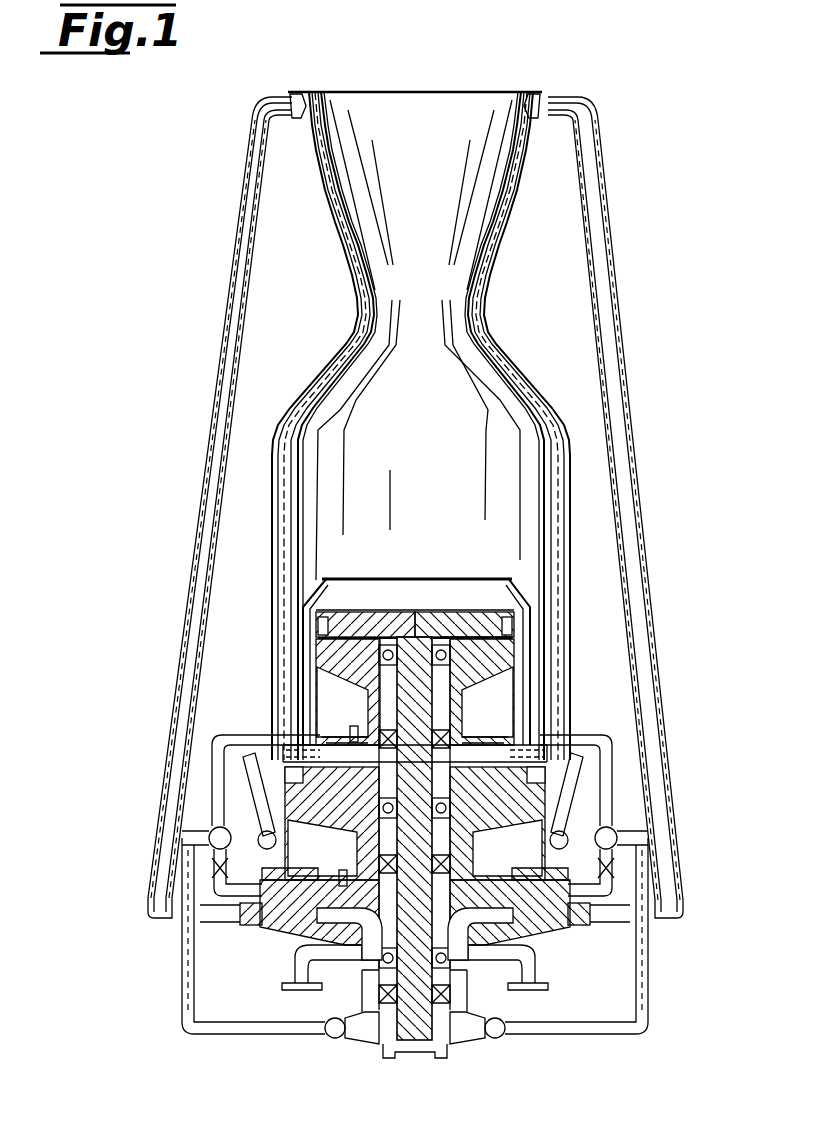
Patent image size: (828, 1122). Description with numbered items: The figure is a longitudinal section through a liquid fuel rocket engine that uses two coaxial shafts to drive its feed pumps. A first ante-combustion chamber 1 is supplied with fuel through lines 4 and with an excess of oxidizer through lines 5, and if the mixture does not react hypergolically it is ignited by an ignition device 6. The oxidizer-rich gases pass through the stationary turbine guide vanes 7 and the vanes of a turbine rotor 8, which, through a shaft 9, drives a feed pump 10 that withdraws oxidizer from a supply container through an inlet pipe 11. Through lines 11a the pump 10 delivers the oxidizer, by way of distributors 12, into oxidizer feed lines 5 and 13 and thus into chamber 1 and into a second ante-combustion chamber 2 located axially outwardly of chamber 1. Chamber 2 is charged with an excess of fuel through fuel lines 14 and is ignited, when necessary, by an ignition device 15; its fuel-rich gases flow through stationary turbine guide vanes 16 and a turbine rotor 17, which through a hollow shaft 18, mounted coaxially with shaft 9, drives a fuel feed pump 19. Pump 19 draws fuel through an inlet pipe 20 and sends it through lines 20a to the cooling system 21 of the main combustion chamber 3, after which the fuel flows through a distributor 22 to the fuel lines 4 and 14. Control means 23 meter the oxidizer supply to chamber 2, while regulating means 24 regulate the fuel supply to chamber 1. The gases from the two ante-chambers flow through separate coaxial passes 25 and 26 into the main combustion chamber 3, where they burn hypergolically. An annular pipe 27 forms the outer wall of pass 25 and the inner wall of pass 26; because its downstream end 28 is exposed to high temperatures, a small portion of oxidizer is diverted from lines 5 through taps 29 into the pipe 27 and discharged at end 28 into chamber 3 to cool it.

The first ante-combustion chamber 1 is at (489, 698).
The second ante-combustion chamber 2 is at (513, 841).
The main combustion chamber 3 is at (410, 392).
The fuel lines 4 is at (350, 737).
The oxidizer feed lines 5 is at (330, 742).
The ignition device 6 is at (354, 726).
The stationary turbine guide vanes 7 is at (320, 666).
The turbine rotor 8 is at (426, 610).
The shaft 9 is at (405, 878).
The feed pump 10 is at (362, 1040).
The inlet pipe 11 is at (414, 1060).
The lines 11a is at (224, 1034).
The distributors 12 is at (210, 833).
The oxidizer feed lines 13 is at (326, 892).
The fuel lines 14 is at (303, 876).
The ignition device 15 is at (344, 868).
The stationary turbine guide vanes 16 is at (294, 814).
The turbine rotor 17 is at (278, 740).
The hollow shaft 18 is at (414, 838).
The fuel feed pump 19 is at (530, 930).
The inlet pipe 20 is at (298, 990).
The lines 20a is at (212, 452).
The cooling system 21 is at (330, 375).
The distributor 22 is at (266, 831).
The control means 23 is at (205, 873).
The control or regulating means 24 is at (250, 784).
The coaxial pass 25 is at (346, 604).
The coaxial pass 26 is at (300, 628).
The annular pipe 27 is at (522, 648).
The pipe end 28 is at (506, 580).
The taps 29 is at (292, 745).